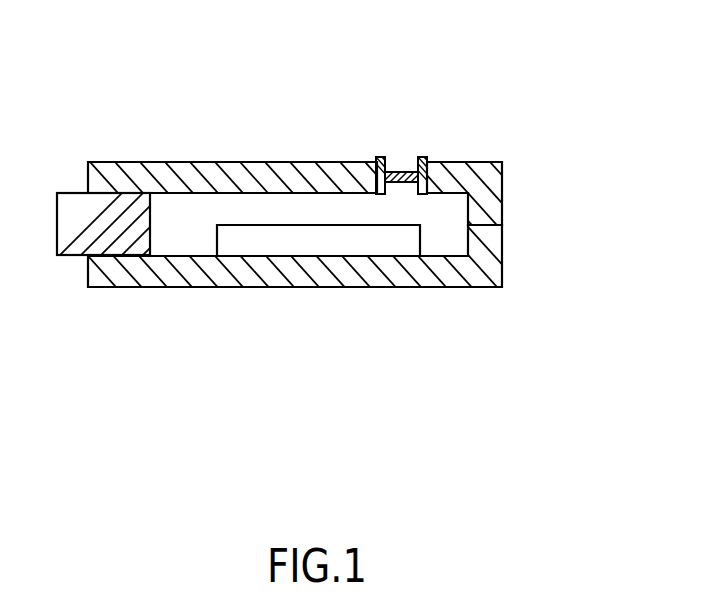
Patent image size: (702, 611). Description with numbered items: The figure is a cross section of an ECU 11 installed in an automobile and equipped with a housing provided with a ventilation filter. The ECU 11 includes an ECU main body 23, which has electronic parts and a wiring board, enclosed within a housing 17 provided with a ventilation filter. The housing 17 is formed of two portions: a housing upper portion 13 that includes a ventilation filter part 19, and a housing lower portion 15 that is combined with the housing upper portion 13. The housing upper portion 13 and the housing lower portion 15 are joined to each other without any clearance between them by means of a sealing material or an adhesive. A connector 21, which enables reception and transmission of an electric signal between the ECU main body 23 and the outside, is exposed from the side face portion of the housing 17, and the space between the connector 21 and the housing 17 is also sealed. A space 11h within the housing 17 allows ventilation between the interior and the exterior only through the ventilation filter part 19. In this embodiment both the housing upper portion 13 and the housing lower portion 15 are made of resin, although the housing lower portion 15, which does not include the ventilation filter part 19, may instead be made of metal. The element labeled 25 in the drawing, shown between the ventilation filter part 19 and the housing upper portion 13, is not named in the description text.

The ECU 11 is at (326, 191).
The space 11h is at (258, 205).
The housing upper portion 13 is at (488, 182).
The housing lower portion 15 is at (573, 168).
The housing provided with a ventilation filter 17 is at (326, 224).
The ventilation filter part 19 is at (372, 157).
The connector 21 is at (72, 249).
The ECU main body 23 is at (320, 249).
The connection member 25 is at (408, 177).